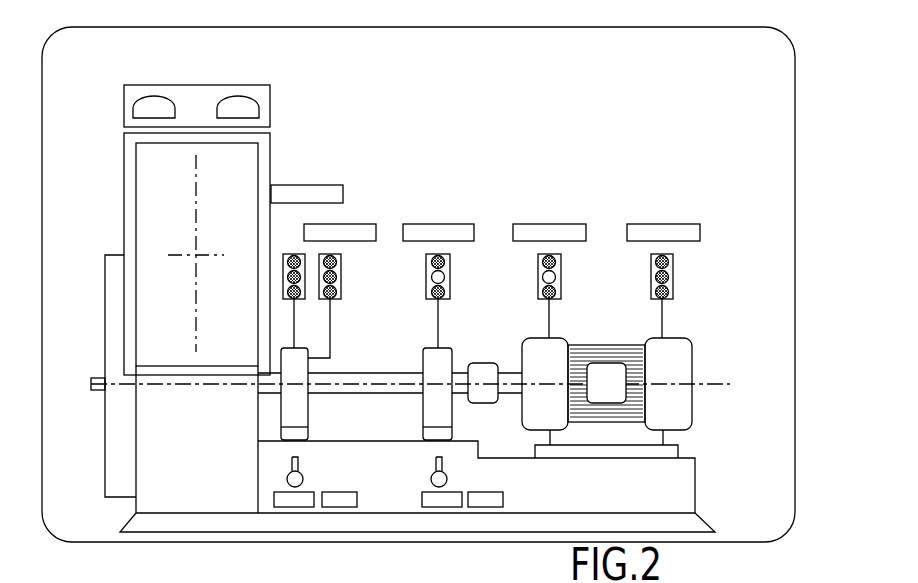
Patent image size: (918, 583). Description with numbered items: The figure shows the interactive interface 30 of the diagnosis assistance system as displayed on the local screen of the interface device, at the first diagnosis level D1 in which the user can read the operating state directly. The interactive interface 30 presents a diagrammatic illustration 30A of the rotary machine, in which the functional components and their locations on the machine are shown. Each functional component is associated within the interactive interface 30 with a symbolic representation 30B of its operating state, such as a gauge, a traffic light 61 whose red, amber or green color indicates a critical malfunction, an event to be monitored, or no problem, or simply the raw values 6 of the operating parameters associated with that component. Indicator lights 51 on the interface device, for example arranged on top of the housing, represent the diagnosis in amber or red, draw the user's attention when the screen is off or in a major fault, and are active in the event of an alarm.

The interactive interface 30 is at (728, 128).
The first diagnosis level D1 is at (623, 98).
The indicator lights 51 is at (232, 107).
The diagrammatic illustration 30A is at (663, 495).
The symbolic representation 30B is at (283, 278).
The raw values 6 is at (339, 235).
The traffic light 61 is at (341, 278).